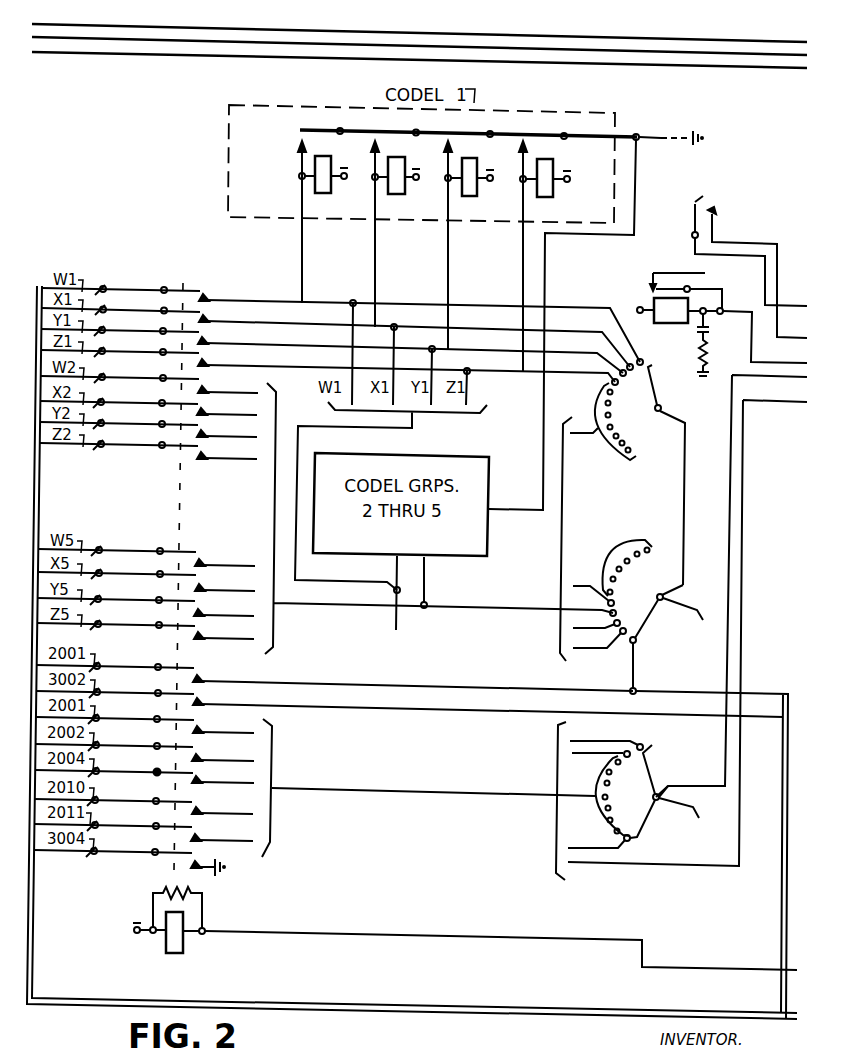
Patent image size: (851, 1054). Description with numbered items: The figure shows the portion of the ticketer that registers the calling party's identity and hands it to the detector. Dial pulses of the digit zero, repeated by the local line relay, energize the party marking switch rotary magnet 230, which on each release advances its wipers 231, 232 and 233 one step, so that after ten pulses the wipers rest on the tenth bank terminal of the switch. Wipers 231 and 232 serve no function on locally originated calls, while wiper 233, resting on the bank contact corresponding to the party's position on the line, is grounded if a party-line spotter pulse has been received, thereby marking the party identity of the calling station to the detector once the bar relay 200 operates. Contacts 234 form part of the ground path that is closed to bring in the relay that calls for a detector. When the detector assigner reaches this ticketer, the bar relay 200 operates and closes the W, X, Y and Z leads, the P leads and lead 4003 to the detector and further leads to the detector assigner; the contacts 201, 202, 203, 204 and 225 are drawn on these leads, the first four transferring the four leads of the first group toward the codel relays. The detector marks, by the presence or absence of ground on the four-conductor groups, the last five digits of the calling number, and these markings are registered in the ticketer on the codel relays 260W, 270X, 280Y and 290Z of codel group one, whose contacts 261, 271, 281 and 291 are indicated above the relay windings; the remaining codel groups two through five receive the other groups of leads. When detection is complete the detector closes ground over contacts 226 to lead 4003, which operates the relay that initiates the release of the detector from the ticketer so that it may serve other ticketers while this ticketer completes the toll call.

The bar relay 200 is at (175, 953).
The W1 transfer contact 201 is at (205, 295).
The X1 transfer contact 202 is at (205, 317).
The Y1 transfer contact 203 is at (205, 339).
The Z1 transfer contact 204 is at (205, 361).
The Z5 contact 225 is at (202, 633).
The contacts 226 is at (201, 674).
The party marking switch rotary magnet 230 is at (687, 335).
The wiper 231 is at (627, 475).
The wiper 232 is at (638, 617).
The wiper 233 is at (633, 794).
The contacts 234 is at (718, 190).
The codel relay 260W is at (321, 199).
The relay 260W contact 261 is at (298, 138).
The codel relay 270X is at (390, 199).
The relay 270X contact 271 is at (373, 140).
The codel relay 280Y is at (464, 201).
The relay 280Y contact 281 is at (450, 140).
The codel relay 290Z is at (535, 203).
The relay 290Z contact 291 is at (525, 139).
The lead 4003 is at (745, 694).